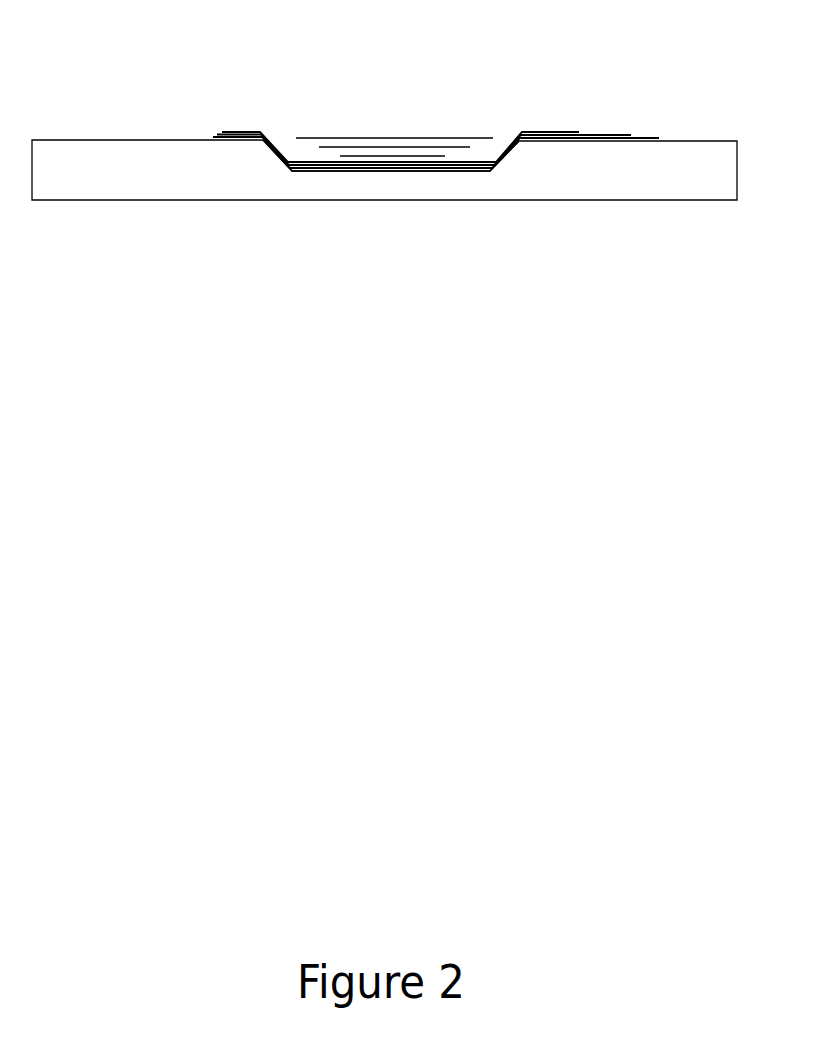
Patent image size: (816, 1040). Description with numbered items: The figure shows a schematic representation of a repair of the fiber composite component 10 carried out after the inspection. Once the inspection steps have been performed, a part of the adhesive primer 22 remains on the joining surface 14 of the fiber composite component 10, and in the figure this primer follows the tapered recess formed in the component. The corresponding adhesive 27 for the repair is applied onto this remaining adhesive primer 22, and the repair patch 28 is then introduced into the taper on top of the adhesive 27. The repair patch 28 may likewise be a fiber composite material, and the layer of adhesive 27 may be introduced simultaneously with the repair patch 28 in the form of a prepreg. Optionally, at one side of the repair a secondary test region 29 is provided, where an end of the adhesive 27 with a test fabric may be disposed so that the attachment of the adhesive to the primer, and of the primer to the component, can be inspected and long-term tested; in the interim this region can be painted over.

The fiber composite component 10 is at (725, 140).
The joining surface 14 is at (507, 152).
The adhesive primer 22 is at (210, 137).
The adhesive 27 is at (217, 132).
The repair patch 28 is at (347, 129).
The secondary test region 29 is at (548, 113).